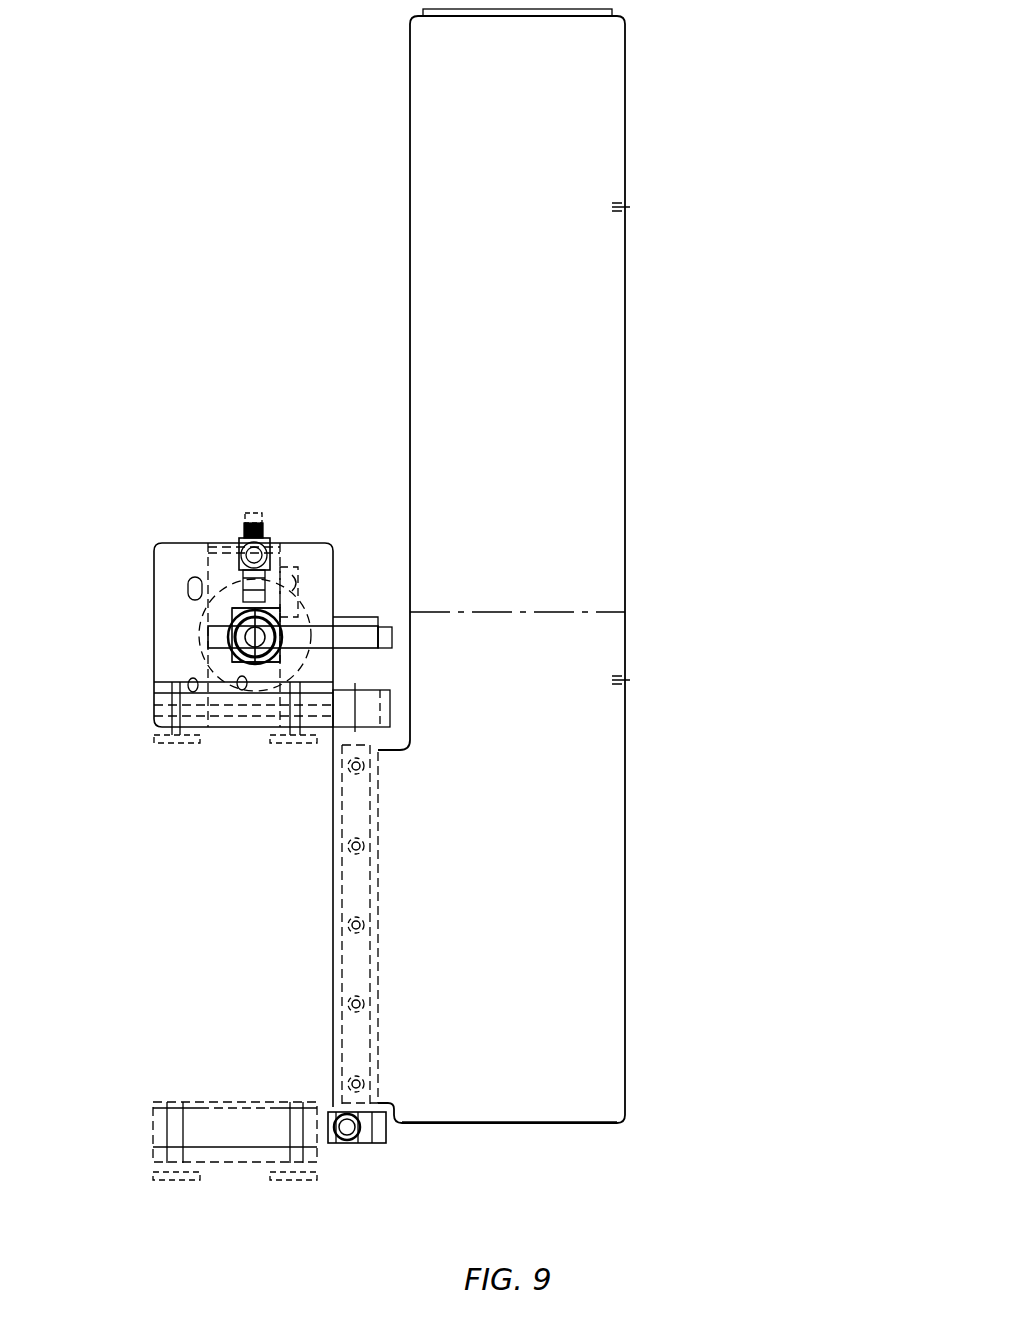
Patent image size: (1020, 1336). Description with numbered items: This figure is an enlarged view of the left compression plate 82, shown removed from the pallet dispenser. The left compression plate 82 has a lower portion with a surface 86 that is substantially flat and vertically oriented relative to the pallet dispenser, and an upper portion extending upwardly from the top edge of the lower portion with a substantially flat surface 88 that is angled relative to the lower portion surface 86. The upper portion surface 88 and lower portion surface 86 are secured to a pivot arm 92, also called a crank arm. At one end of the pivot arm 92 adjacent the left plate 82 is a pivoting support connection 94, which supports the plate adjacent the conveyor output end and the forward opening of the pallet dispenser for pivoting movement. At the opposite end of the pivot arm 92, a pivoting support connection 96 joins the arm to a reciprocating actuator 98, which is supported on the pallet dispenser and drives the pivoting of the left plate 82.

The left compression plate 82 is at (628, 417).
The upper portion surface 88 is at (603, 525).
The lower portion surface 86 is at (587, 897).
The pivot arm 92 is at (325, 622).
The pivoting support connection 94 is at (333, 747).
The pivoting support connection 96 is at (240, 603).
The reciprocating actuator 98 is at (203, 630).